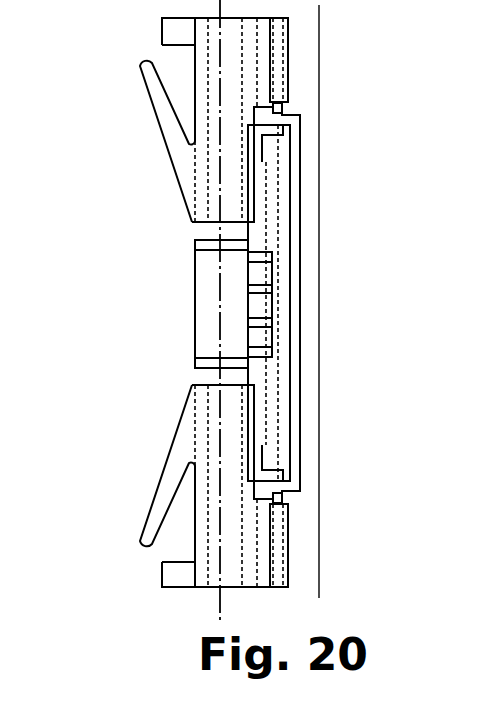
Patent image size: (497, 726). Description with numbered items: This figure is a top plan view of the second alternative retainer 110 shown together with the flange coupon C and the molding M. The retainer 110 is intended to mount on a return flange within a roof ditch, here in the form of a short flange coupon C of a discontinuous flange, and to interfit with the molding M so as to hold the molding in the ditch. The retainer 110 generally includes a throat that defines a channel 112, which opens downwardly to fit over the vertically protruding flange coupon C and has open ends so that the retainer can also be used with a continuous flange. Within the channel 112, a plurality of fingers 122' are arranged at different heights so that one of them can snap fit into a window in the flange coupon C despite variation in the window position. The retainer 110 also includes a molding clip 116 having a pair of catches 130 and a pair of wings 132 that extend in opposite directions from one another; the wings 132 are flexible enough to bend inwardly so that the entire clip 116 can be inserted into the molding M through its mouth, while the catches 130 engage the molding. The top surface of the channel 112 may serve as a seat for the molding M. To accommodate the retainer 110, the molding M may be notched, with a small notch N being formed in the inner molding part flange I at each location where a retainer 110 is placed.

The retainer 110 is at (95, 227).
The channel 112 is at (280, 397).
The molding clip 116 is at (195, 65).
The fingers 122' is at (331, 304).
The catches 130 is at (288, 58).
The wings 132 is at (156, 97).
The molding M is at (322, 157).
The inner molding part flange I is at (312, 125).
The flange coupon C is at (272, 442).
The notch N is at (295, 490).